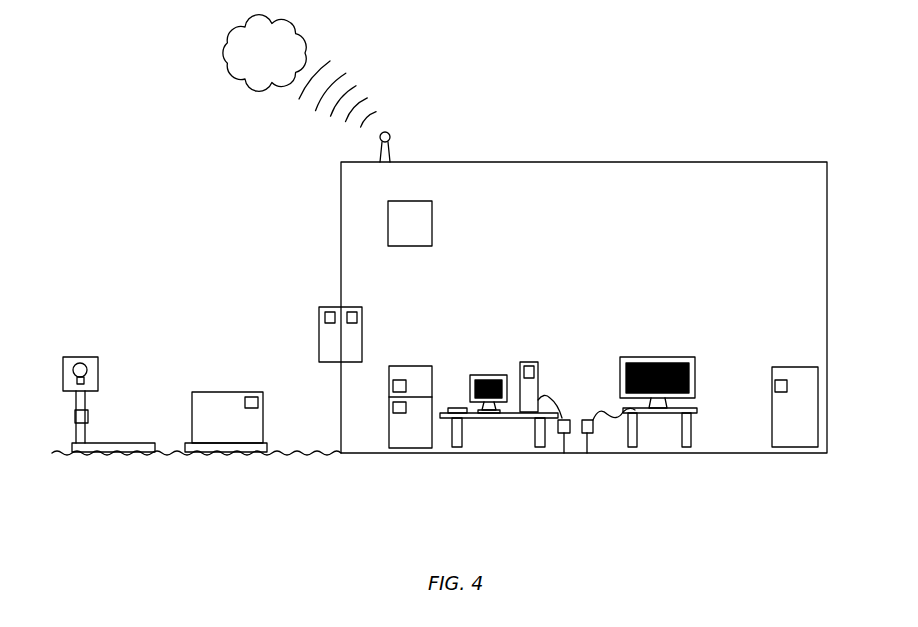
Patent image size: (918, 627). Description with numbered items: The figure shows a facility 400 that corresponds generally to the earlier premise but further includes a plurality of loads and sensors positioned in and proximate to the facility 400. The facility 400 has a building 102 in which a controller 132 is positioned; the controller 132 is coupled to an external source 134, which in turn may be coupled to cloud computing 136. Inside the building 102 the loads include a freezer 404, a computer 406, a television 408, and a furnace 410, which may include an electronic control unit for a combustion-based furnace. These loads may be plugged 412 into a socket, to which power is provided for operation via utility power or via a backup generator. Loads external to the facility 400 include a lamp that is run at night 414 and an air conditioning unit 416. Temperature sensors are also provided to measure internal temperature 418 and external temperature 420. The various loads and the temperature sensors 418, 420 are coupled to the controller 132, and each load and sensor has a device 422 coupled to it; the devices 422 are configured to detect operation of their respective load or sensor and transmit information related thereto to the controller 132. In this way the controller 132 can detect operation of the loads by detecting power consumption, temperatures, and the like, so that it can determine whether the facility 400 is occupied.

The facility 400 is at (700, 76).
The building 102 is at (800, 162).
The cloud computing 136 is at (280, 64).
The external source 134 is at (392, 152).
The controller 132 is at (432, 224).
The external temperature sensor 420 is at (328, 307).
The internal temperature sensor 418 is at (355, 307).
The lamp 414 is at (84, 357).
The air conditioning unit 416 is at (192, 400).
The freezer 404 is at (420, 366).
The computer 406 is at (496, 349).
The television 408 is at (650, 357).
The furnace 410 is at (793, 367).
The devices 422 is at (88, 416).
The plugged 412 is at (586, 453).